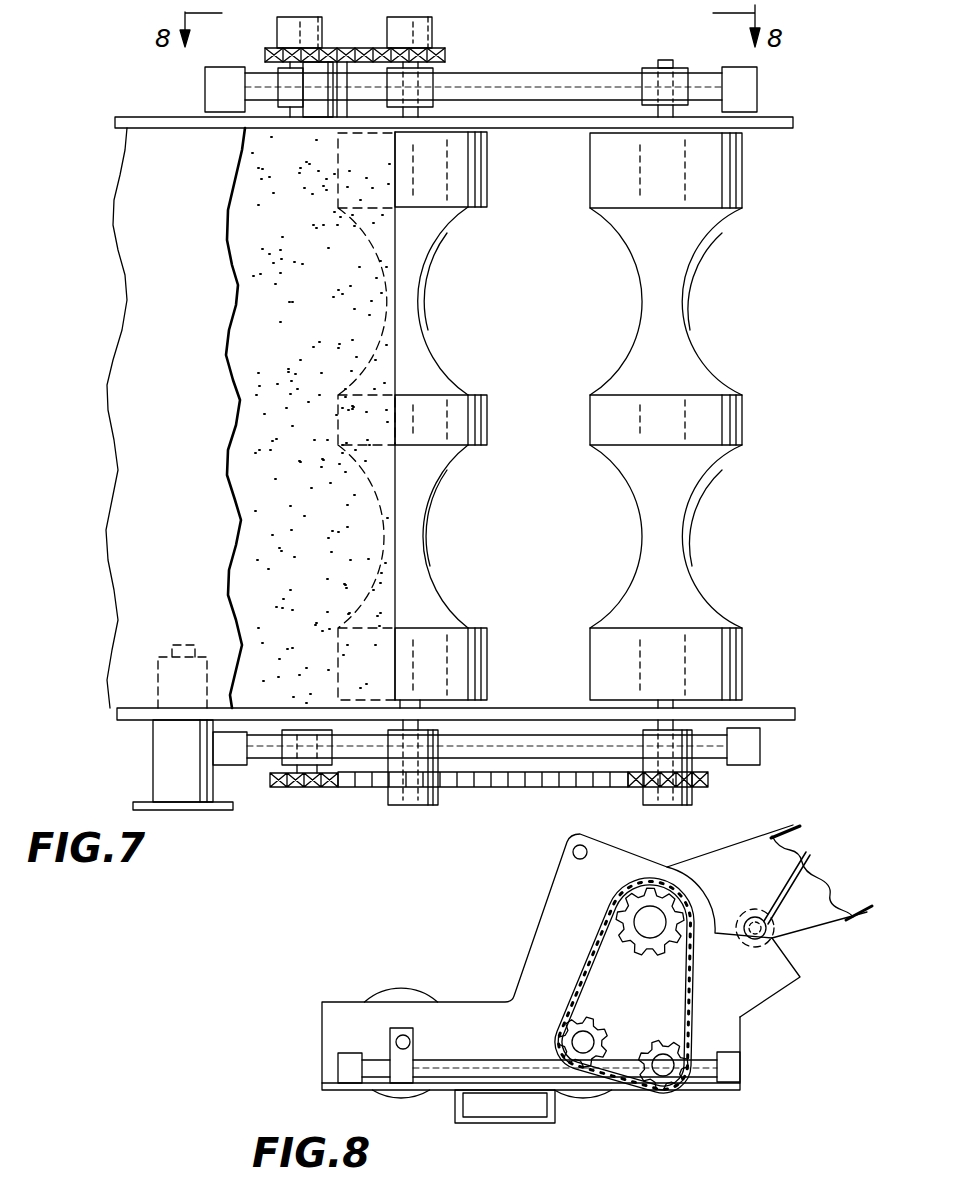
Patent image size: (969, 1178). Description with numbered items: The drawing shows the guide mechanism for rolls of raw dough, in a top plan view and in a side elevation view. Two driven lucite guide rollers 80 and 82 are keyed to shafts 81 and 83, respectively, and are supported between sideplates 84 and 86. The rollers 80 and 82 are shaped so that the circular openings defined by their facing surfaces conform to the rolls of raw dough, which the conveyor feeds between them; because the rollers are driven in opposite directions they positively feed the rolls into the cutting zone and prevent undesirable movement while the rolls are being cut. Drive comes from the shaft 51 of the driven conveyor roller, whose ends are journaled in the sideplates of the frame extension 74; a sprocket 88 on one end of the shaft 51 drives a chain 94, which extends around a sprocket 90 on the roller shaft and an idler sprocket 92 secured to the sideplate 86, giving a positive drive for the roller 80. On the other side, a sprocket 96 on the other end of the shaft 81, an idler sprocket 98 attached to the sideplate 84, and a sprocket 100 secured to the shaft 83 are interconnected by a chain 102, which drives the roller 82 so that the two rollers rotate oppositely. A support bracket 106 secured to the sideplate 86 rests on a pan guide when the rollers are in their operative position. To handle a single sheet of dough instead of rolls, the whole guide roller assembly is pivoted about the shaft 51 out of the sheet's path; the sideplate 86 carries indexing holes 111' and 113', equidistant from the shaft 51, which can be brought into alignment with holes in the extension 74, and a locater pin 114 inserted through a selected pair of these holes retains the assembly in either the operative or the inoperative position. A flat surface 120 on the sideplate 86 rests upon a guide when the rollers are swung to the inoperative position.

In FIG. 7, the shaft 51 is at (327, 100).
In FIG. 8, the extension 74 is at (763, 848).
In FIG. 7, the guide roller 80 is at (470, 396).
In FIG. 8, the guide roller 80 is at (593, 1098).
In FIG. 7, the shaft 81 is at (432, 110).
In FIG. 8, the shaft 81 is at (575, 1040).
In FIG. 7, the guide roller 82 is at (738, 396).
In FIG. 8, the guide roller 82 is at (398, 991).
In FIG. 7, the shaft 83 is at (678, 35).
In FIG. 8, the shaft 83 is at (400, 1040).
In FIG. 7, the sideplate 84 is at (552, 712).
In FIG. 7, the sideplate 86 is at (580, 120).
In FIG. 8, the sideplate 86 is at (543, 943).
In FIG. 7, the sprocket 88 is at (302, 47).
In FIG. 8, the sprocket 88 is at (655, 892).
In FIG. 7, the sprocket 90 is at (445, 49).
In FIG. 8, the sprocket 90 is at (582, 1040).
In FIG. 7, the idler sprocket 92 is at (268, 50).
In FIG. 8, the idler sprocket 92 is at (672, 1046).
In FIG. 7, the chain 94 is at (358, 48).
In FIG. 8, the chain 94 is at (688, 957).
In FIG. 7, the sprocket 96 is at (423, 778).
In FIG. 7, the idler sprocket 98 is at (290, 788).
In FIG. 7, the sprocket 100 is at (708, 778).
In FIG. 7, the chain 102 is at (525, 778).
In FIG. 8, the support bracket 106 is at (495, 1123).
In FIG. 8, the indexing hole 111' is at (813, 882).
In FIG. 8, the indexing hole 113' is at (615, 836).
In FIG. 7, the locater pin 114 is at (200, 777).
In FIG. 8, the locater pin 114 is at (768, 921).
In FIG. 8, the flat surface 120 is at (803, 964).